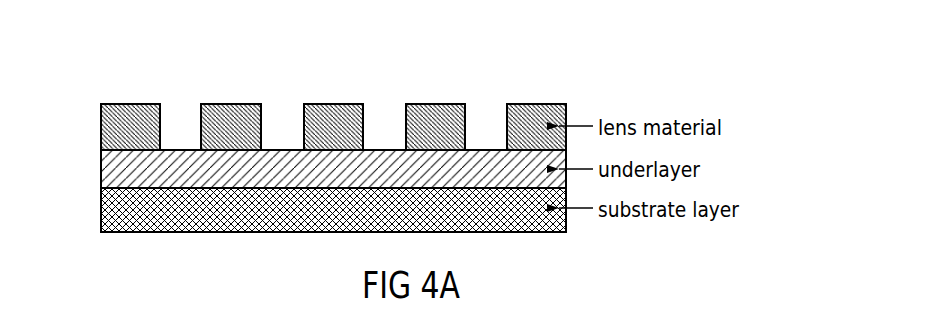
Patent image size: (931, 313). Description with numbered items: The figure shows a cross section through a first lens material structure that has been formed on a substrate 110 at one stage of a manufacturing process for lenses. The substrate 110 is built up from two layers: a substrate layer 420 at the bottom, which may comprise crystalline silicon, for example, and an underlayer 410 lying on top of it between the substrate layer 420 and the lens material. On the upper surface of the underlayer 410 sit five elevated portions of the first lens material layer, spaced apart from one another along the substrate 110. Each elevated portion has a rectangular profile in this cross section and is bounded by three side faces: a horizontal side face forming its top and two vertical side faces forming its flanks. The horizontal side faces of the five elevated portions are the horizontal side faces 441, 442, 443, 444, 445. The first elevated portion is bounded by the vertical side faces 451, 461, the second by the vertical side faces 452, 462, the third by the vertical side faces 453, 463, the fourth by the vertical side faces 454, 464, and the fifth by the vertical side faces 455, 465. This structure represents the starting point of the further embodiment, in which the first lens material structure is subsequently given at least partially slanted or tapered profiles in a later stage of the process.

The substrate 110 is at (742, 156).
The underlayer 410 is at (120, 172).
The substrate layer 420 is at (118, 217).
The horizontal side face 441 is at (139, 107).
The horizontal side face 442 is at (239, 107).
The horizontal side face 443 is at (341, 107).
The horizontal side face 444 is at (444, 107).
The horizontal side face 445 is at (546, 107).
The vertical side face 451 is at (101, 128).
The vertical side face 452 is at (201, 108).
The vertical side face 453 is at (304, 108).
The vertical side face 454 is at (406, 108).
The vertical side face 455 is at (507, 108).
The vertical side face 461 is at (162, 108).
The vertical side face 462 is at (263, 108).
The vertical side face 463 is at (365, 108).
The vertical side face 464 is at (467, 108).
The vertical side face 465 is at (568, 108).